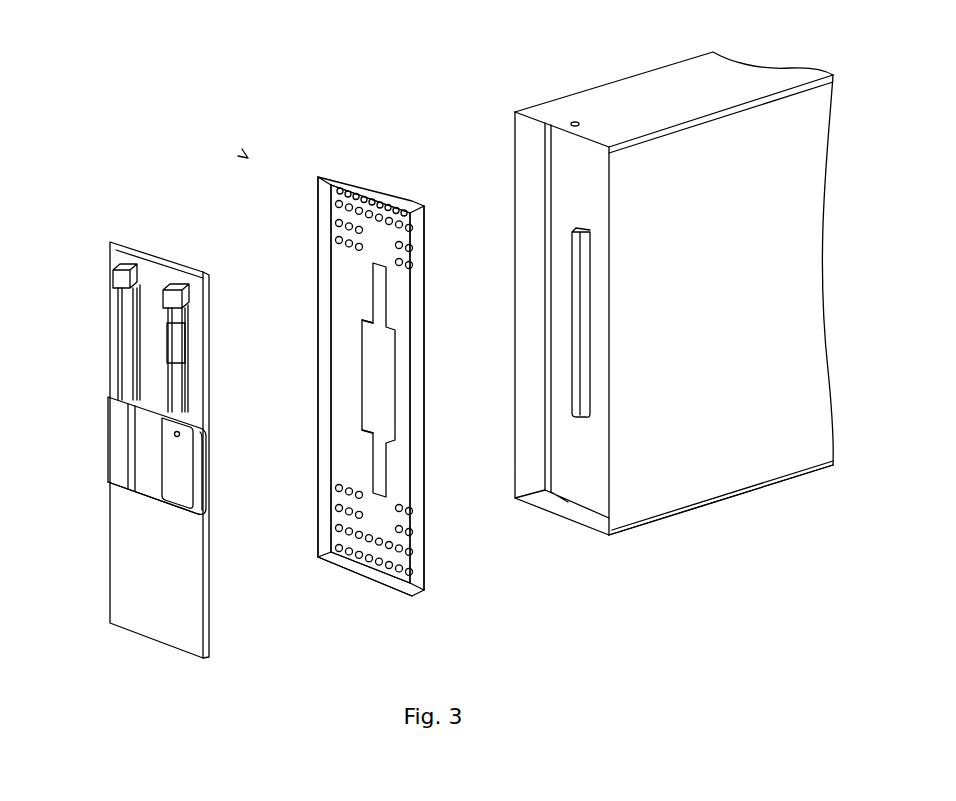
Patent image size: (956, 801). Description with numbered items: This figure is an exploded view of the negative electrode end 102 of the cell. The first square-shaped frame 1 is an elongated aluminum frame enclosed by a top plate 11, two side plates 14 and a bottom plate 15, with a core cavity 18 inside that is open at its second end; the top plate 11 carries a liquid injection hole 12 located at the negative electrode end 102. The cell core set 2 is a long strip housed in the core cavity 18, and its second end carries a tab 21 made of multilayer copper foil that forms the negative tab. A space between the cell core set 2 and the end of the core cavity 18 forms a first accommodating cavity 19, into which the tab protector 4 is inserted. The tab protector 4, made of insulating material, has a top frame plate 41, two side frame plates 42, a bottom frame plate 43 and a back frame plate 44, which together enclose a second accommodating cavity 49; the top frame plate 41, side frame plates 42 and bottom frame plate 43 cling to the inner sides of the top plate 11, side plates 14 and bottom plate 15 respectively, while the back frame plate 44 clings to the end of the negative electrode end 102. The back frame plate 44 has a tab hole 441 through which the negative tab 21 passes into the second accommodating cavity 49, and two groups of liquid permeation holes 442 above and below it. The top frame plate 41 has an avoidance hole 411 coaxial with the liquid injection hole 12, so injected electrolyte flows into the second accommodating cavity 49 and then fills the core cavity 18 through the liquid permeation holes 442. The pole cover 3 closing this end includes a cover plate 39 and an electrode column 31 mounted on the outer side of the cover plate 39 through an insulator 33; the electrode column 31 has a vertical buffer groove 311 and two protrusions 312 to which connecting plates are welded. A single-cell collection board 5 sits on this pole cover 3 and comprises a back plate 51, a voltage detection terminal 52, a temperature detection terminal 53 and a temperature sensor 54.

The first square-shaped frame 1 is at (625, 321).
The cell core set 2 is at (582, 485).
The pole cover 3 is at (157, 380).
The tab protector 4 is at (366, 367).
The single-cell collection board 5 is at (113, 257).
The top plate 11 is at (690, 105).
The liquid injection hole 12 is at (574, 121).
The side plate 14 is at (520, 333).
The bottom plate 15 is at (546, 500).
The core cavity 18 is at (512, 176).
The first accommodating cavity 19 is at (568, 512).
The tab 21 is at (590, 400).
The electrode column 31 is at (157, 450).
The insulator 33 is at (140, 488).
The cover plate 39 is at (130, 590).
The top frame plate 41 is at (348, 151).
The side frame plate 42 is at (340, 235).
The bottom frame plate 43 is at (373, 597).
The back frame plate 44 is at (348, 283).
The second accommodating cavity 49 is at (342, 345).
The back plate 51 is at (150, 312).
The voltage detection terminal 52 is at (118, 272).
The temperature detection terminal 53 is at (178, 285).
The temperature sensor 54 is at (170, 358).
The negative electrode end 102 is at (248, 158).
The buffer groove 311 is at (147, 432).
The protrusion 312 is at (176, 465).
The avoidance hole 411 is at (370, 190).
The tab hole 441 is at (378, 385).
The liquid permeation holes 442 is at (407, 240).